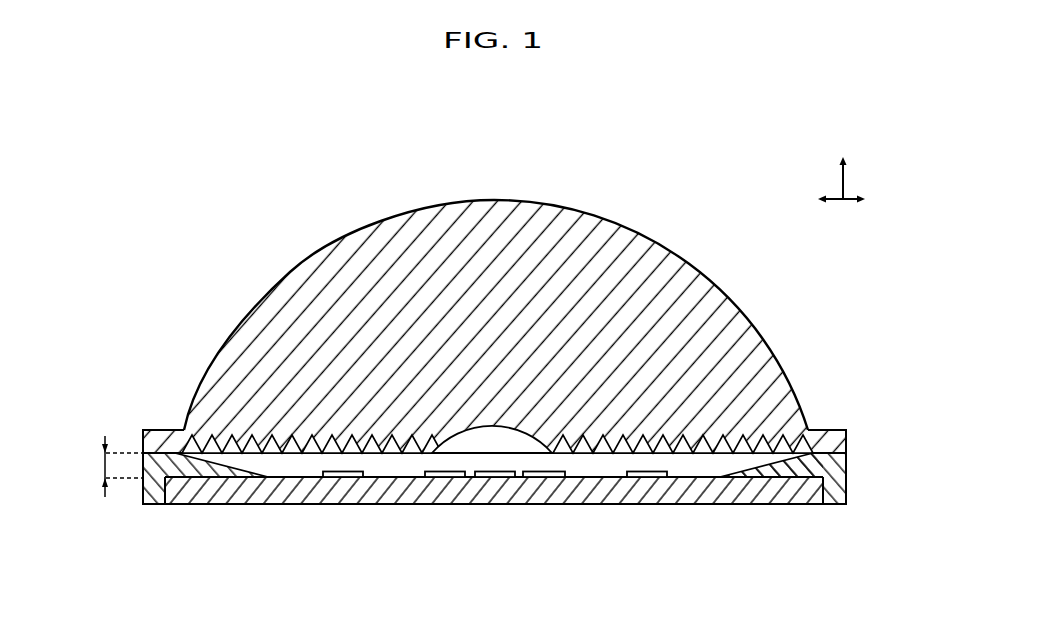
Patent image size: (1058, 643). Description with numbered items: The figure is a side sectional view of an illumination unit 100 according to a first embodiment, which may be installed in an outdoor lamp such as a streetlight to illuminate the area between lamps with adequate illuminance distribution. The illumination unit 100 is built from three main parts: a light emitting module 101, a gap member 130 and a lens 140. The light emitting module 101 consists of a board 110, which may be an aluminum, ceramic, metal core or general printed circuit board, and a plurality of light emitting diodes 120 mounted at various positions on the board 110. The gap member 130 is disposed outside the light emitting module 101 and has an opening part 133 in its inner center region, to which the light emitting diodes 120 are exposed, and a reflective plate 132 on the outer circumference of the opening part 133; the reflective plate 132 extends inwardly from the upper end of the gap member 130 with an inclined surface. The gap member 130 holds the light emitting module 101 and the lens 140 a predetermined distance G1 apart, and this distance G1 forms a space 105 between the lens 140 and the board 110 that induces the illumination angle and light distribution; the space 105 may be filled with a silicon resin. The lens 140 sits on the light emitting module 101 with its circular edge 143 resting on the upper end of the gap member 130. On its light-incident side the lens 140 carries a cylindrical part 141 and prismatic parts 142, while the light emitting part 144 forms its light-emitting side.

The illumination unit 100 is at (240, 125).
The light emitting module 101 is at (270, 513).
The space 105 is at (607, 470).
The board 110 is at (350, 504).
The light emitting diodes 120 is at (445, 477).
The gap member 130 is at (155, 504).
The reflective plate 132 is at (750, 469).
The opening part 133 is at (707, 478).
The lens 140 is at (720, 280).
The cylindrical part 141 is at (487, 426).
The prismatic parts 142 is at (658, 445).
The edge 143 is at (833, 443).
The light emitting part 144 is at (774, 352).
The predetermined distance G1 is at (104, 466).